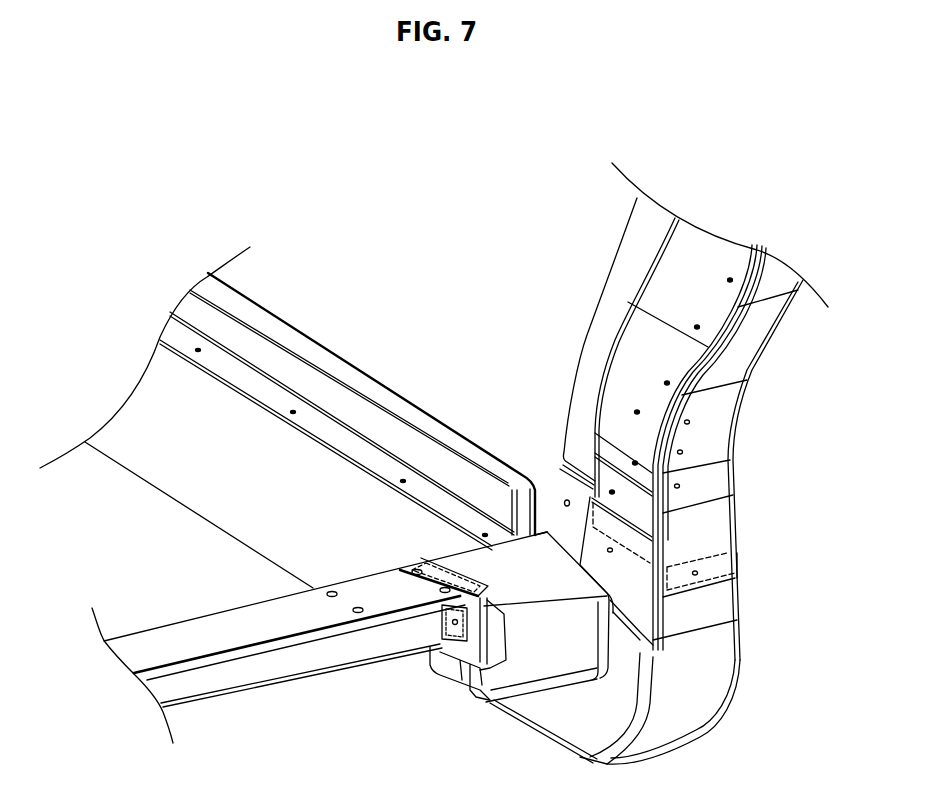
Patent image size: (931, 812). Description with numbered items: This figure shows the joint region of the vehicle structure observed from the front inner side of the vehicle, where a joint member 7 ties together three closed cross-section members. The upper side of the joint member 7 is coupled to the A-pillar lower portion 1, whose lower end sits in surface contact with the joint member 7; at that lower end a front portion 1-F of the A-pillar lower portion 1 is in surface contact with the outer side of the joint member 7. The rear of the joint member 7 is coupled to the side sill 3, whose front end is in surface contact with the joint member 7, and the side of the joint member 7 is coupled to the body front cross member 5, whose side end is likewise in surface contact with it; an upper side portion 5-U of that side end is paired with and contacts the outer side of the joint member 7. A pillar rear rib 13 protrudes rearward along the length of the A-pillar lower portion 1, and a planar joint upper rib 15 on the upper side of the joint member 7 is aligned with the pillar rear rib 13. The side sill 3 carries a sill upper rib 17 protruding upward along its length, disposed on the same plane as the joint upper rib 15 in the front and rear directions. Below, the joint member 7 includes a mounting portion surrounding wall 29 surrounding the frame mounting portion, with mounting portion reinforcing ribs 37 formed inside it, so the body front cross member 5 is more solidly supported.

The A-pillar lower portion 1 is at (750, 340).
The front portion 1-F is at (728, 565).
The side sill 3 is at (218, 492).
The body front cross member 5 is at (268, 665).
The upper side portion 5-U is at (457, 575).
The joint member 7 is at (703, 695).
The pillar rear rib 13 is at (618, 273).
The joint upper rib 15 is at (550, 488).
The sill upper rib 17 is at (361, 411).
The mounting portion surrounding wall 29 is at (468, 687).
The mounting portion reinforcing ribs 37 is at (432, 672).